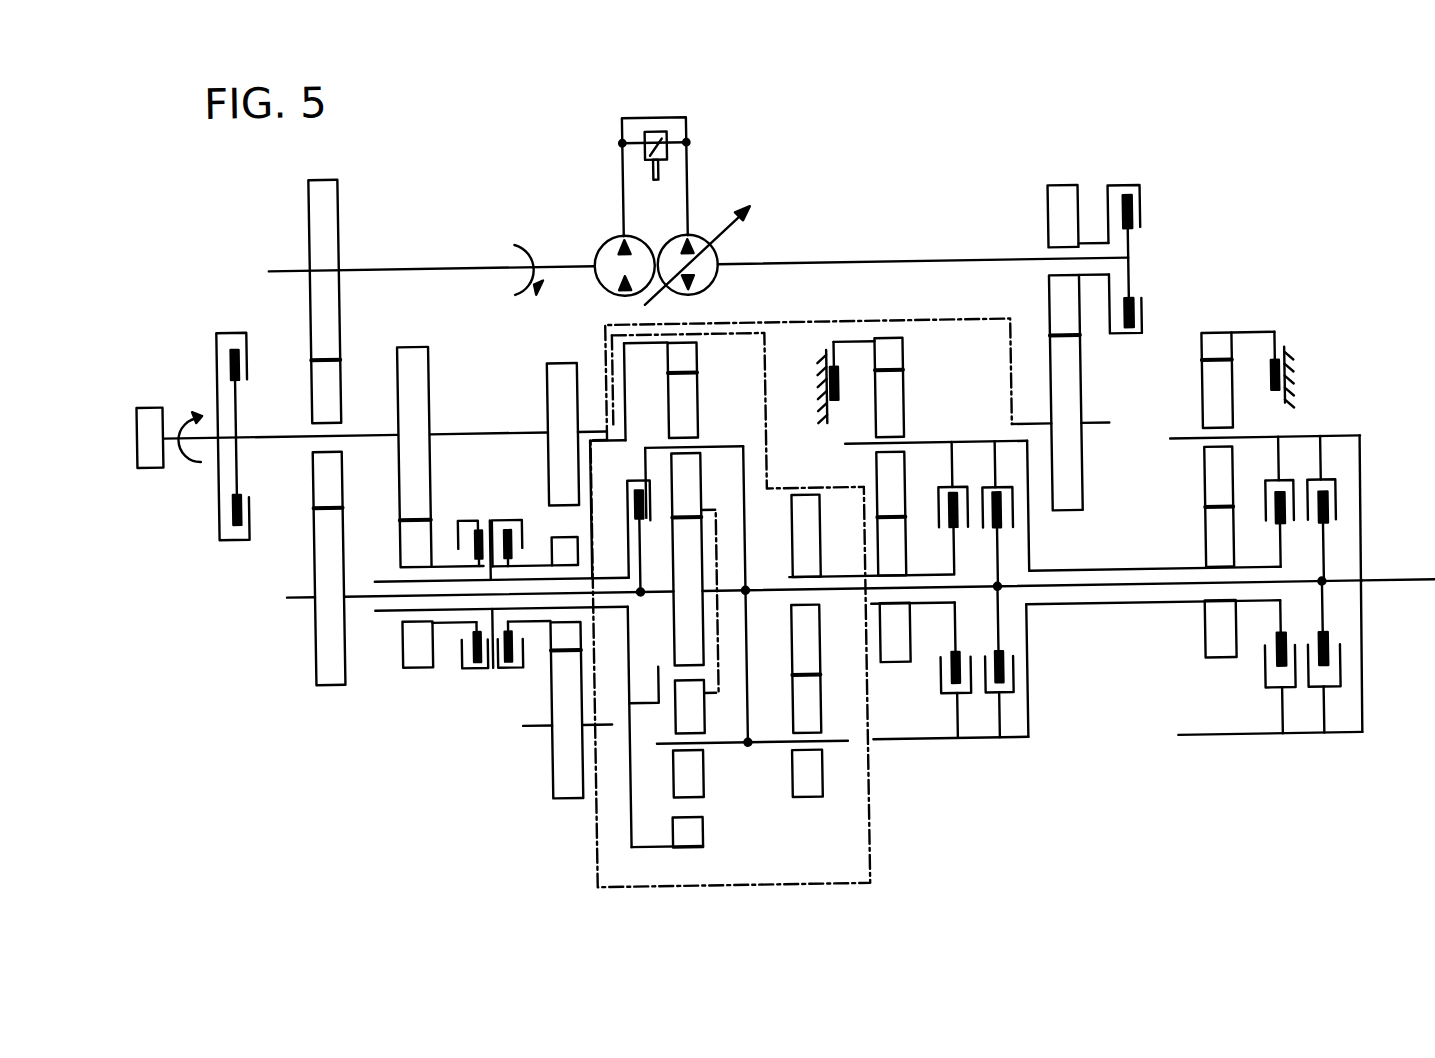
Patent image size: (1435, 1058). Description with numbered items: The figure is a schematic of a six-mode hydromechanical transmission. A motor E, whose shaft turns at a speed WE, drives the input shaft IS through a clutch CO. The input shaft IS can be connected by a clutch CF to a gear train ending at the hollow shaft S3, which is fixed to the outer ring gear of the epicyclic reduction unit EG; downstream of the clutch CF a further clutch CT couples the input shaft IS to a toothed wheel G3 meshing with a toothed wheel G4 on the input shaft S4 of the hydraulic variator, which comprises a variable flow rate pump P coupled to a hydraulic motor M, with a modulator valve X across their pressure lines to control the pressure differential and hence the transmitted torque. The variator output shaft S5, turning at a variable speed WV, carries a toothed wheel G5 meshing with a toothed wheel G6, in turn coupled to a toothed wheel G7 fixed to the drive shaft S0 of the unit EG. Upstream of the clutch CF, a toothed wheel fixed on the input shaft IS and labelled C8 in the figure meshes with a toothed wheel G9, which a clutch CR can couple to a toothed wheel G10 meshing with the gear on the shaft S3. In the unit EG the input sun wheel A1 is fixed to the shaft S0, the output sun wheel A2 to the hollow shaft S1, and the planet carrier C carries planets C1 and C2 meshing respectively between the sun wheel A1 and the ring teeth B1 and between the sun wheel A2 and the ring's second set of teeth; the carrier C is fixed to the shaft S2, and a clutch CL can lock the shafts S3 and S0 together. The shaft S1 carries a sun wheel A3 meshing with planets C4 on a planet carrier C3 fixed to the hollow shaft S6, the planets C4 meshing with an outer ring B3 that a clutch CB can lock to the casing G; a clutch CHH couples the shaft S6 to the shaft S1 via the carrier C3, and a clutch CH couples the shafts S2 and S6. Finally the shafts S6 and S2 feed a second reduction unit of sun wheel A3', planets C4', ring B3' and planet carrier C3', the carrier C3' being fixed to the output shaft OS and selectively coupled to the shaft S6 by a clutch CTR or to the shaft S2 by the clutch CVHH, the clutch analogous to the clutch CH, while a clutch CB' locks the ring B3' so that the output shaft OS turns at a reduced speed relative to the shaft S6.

The motor E is at (149, 438).
The motor shaft speed WE is at (190, 410).
The input shaft IS is at (270, 430).
The clutch CO is at (234, 322).
The toothed wheel G5 is at (327, 190).
The toothed wheel G6 is at (330, 404).
The toothed wheel G7 is at (316, 644).
The output shaft of the variator S5 is at (418, 265).
The variator output shaft speed WV is at (520, 243).
The hydraulic motor M is at (603, 252).
The variable flow rate pump P is at (730, 262).
The modulator valve X is at (668, 139).
The input shaft of the hydraulic variator unit S4 is at (852, 265).
The clutch C8 is at (563, 362).
The drive shaft S0 is at (380, 577).
The clutch CL is at (656, 480).
The hollow shaft S3 is at (385, 610).
The clutch CF is at (470, 668).
The clutch CR is at (505, 668).
The toothed wheel G10 is at (562, 634).
The toothed wheel G9 is at (560, 758).
The epicyclic reduction unit EG is at (585, 826).
The set of teeth of the outer ring gear B1 is at (700, 353).
The planets C1 is at (700, 400).
The planet carrier C is at (745, 460).
The input sun wheel A1 is at (688, 518).
The shaft S2 is at (752, 592).
The output shaft OS is at (1415, 594).
The output sun wheel A2 is at (802, 540).
The planets C2 is at (815, 700).
The hollow shaft S1 is at (822, 578).
The body or casing G is at (822, 372).
The clutch CB is at (827, 412).
The outer ring B3 is at (916, 347).
The planets C4 is at (899, 443).
The planet carrier C3 is at (937, 487).
The sun wheel A3 is at (911, 589).
The clutch CHH is at (942, 492).
The clutch CH is at (1012, 515).
The hollow shaft S6 is at (1090, 577).
The toothed wheel G4 is at (1056, 300).
The toothed wheel G3 is at (1085, 400).
The clutch CT is at (1130, 192).
The ring B3' is at (1207, 320).
The planets C4' is at (1185, 433).
The clutch CB' is at (1287, 311).
The planet carrier C3' is at (1273, 413).
The sun wheel A3' is at (1199, 569).
The clutch CVHH is at (1350, 502).
The clutch CTR is at (1255, 680).